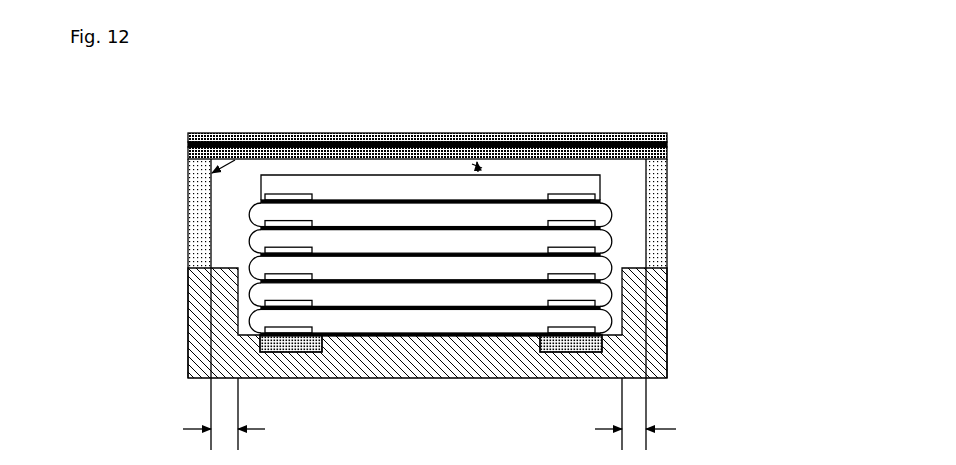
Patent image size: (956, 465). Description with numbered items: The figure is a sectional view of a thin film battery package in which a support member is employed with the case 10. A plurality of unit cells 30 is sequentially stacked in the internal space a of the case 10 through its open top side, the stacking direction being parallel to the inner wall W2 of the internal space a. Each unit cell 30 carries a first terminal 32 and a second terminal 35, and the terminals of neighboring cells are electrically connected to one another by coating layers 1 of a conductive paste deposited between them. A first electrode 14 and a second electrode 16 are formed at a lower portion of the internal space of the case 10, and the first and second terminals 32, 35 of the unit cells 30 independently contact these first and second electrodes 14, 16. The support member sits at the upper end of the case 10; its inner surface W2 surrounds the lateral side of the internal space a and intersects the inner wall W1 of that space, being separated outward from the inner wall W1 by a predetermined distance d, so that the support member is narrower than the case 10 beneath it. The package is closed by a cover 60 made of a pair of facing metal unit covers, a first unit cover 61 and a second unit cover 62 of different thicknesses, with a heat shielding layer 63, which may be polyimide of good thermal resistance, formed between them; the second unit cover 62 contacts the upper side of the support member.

The coating layer 1 is at (438, 252).
The case 10 is at (645, 333).
The first electrode 14 is at (260, 343).
The second electrode 16 is at (580, 347).
The unit cell 30 is at (283, 182).
The first terminal 32 is at (282, 195).
The second terminal 35 is at (573, 197).
The cover 60 is at (477, 118).
The first unit cover 61 is at (665, 135).
The second unit cover 62 is at (667, 153).
The heat shielding layer 63 is at (667, 147).
The internal space a is at (527, 132).
The inner wall W1 is at (243, 298).
The inner surface W2 is at (267, 132).
The predetermined distance d is at (429, 430).